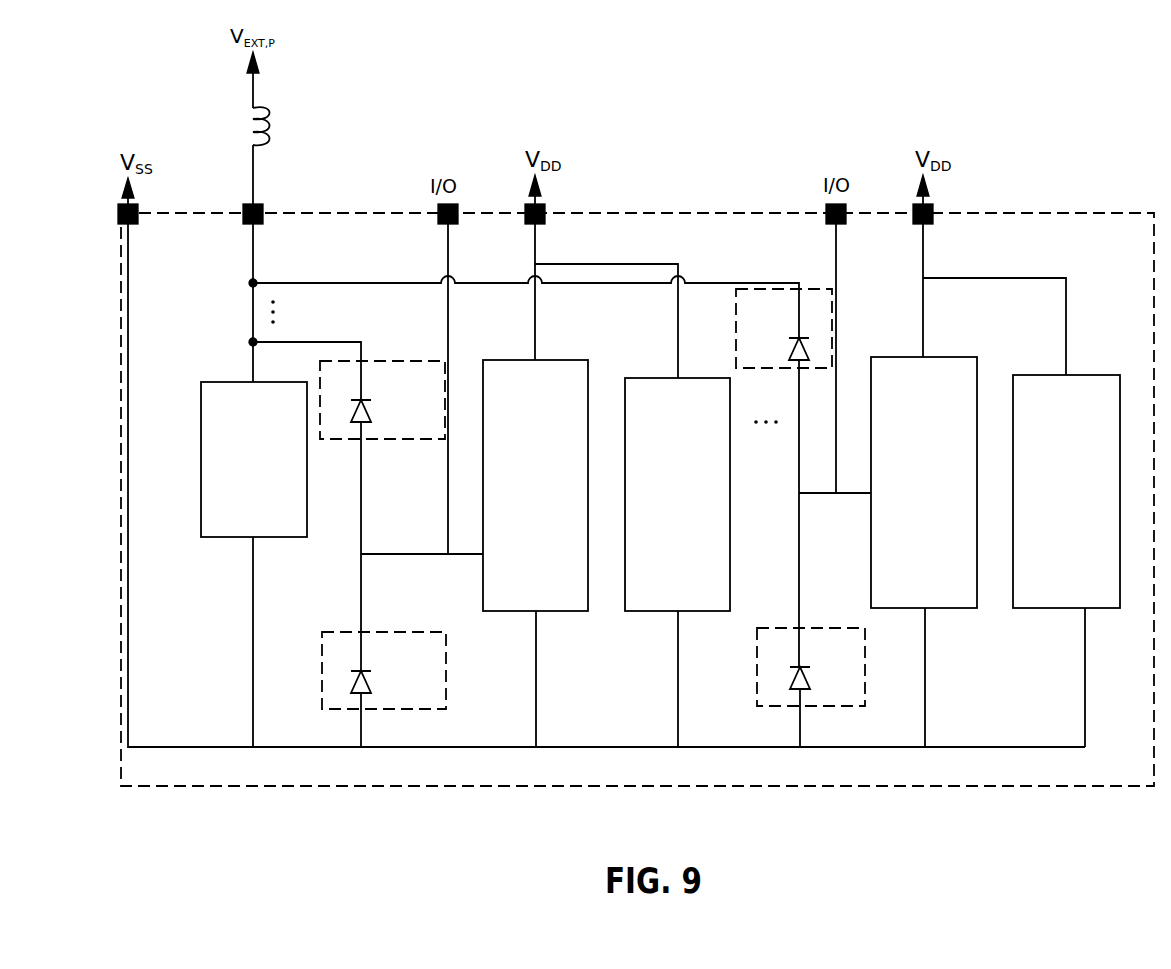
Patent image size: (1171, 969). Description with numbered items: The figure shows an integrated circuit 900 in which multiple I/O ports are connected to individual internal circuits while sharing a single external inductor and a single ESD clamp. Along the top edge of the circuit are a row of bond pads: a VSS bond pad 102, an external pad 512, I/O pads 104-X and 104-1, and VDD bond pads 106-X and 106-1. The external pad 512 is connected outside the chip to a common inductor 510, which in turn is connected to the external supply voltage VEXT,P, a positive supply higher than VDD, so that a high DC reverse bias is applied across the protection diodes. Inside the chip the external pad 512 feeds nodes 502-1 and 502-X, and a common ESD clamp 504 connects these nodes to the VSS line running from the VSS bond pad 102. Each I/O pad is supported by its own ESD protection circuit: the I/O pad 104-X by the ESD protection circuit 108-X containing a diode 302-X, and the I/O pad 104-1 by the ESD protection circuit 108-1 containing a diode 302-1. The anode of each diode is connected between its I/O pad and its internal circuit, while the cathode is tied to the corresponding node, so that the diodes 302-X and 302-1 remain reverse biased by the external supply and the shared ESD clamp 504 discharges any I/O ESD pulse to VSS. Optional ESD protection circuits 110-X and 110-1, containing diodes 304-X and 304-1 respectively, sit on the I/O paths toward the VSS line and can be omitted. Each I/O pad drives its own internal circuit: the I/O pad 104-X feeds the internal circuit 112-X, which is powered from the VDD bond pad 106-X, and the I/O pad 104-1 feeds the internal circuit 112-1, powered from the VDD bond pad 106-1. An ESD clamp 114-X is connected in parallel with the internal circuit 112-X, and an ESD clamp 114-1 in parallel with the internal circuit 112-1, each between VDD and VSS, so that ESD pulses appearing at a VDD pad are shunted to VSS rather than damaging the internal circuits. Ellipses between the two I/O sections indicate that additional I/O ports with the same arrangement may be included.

The integrated circuit 900 is at (1087, 208).
The VSS bond pad 102 is at (139, 210).
The external pad 512 is at (264, 210).
The inductor 510 is at (282, 128).
The I/O pad 104-X is at (437, 210).
The I/O pad 104-1 is at (826, 210).
The VDD bond pad 106-X is at (546, 208).
The VDD bond pad 106-1 is at (934, 208).
The node 502-1 is at (253, 283).
The node 502-X is at (253, 342).
The ESD clamp 504 is at (218, 537).
The ESD protection circuit 108-X is at (383, 361).
The ESD protection circuit 108-1 is at (737, 311).
The diode 302-X is at (392, 406).
The diode 302-1 is at (774, 348).
The ESD protection circuit 110-X is at (472, 638).
The ESD protection circuit 110-1 is at (863, 683).
The diode 304-X is at (394, 674).
The diode 304-1 is at (825, 679).
The internal circuit 112-X is at (573, 612).
The internal circuit 112-1 is at (960, 355).
The ESD clamp 114-X is at (717, 612).
The ESD clamp 114-1 is at (1110, 373).